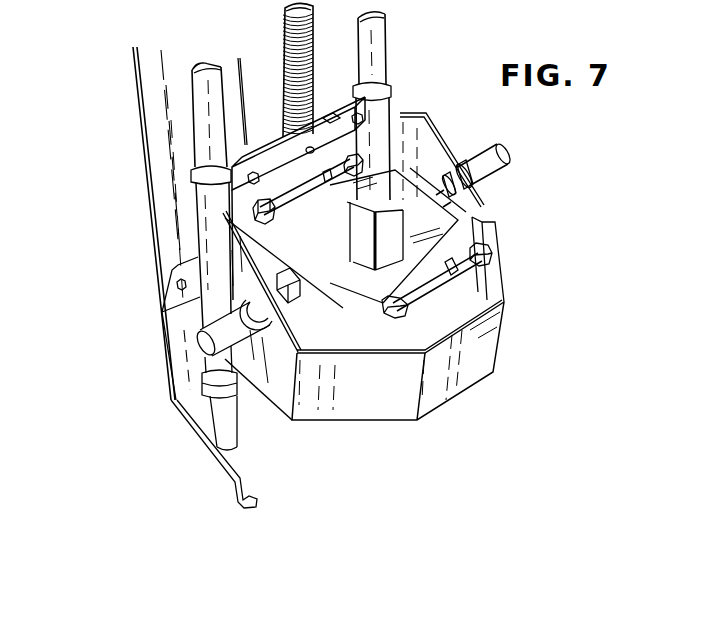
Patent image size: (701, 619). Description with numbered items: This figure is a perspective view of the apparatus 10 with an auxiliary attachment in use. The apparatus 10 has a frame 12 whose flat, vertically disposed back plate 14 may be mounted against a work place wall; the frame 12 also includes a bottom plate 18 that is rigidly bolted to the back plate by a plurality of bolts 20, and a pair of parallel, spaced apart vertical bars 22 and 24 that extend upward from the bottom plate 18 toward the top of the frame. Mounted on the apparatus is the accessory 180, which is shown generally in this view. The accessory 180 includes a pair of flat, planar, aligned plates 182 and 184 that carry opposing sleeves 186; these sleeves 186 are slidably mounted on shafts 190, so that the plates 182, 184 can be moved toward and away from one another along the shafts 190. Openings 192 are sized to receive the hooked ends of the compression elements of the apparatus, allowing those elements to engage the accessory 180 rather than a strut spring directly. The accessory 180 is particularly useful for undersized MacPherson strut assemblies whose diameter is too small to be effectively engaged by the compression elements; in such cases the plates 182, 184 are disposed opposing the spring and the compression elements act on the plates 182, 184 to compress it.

The apparatus 10 is at (103, 232).
The frame 12 is at (120, 111).
The back plate 14 is at (145, 184).
The bottom plate 18 is at (170, 367).
The bolts 20 is at (176, 284).
The vertical bar 22 is at (212, 62).
The vertical bar 24 is at (386, 47).
The accessory 180 is at (470, 205).
The plate 182 is at (336, 255).
The plate 184 is at (409, 238).
The sleeves 186 is at (350, 182).
The shafts 190 is at (287, 187).
The openings 192 is at (296, 298).